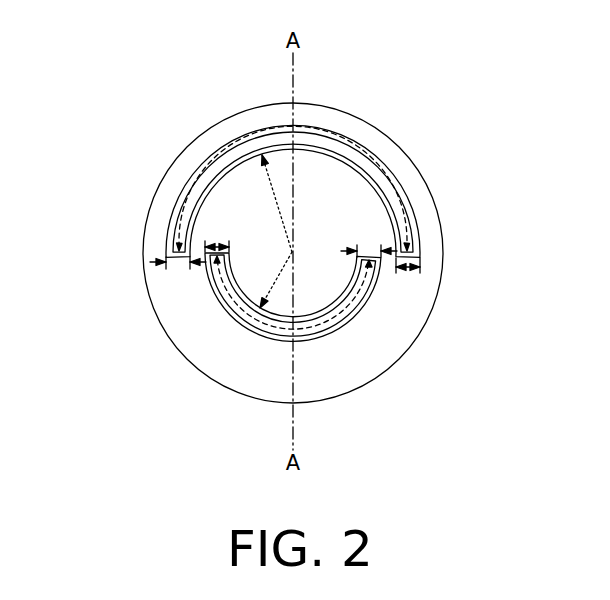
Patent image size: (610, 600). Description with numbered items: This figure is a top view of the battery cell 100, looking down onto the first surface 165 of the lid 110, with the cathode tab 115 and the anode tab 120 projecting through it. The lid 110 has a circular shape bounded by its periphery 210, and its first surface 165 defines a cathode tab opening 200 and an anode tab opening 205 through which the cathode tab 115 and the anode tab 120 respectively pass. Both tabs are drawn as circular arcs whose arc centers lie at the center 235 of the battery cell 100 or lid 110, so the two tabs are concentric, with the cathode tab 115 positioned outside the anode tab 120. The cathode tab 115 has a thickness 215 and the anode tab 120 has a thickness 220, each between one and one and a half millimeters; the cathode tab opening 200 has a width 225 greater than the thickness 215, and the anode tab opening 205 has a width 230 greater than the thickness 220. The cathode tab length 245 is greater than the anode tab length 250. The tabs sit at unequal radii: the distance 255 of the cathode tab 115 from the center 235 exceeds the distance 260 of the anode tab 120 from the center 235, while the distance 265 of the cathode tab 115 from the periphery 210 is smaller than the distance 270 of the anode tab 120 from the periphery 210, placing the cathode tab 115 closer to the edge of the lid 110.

The battery cell 100 is at (352, 294).
The lid 110 is at (443, 228).
The cathode tab 115 is at (345, 140).
The anode tab 120 is at (281, 320).
The first surface 165 is at (221, 366).
The cathode tab opening 200 is at (293, 181).
The anode tab opening 205 is at (372, 278).
The periphery 210 is at (423, 333).
The thickness 215 is at (175, 272).
The thickness 220 is at (370, 247).
The width 225 is at (412, 273).
The width 230 is at (218, 242).
The center 235 is at (297, 252).
The cathode tab length 245 is at (393, 172).
The anode tab length 250 is at (222, 306).
The distance 255 is at (292, 250).
The distance 260 is at (278, 289).
The distance 265 is at (230, 143).
The distance 270 is at (345, 388).